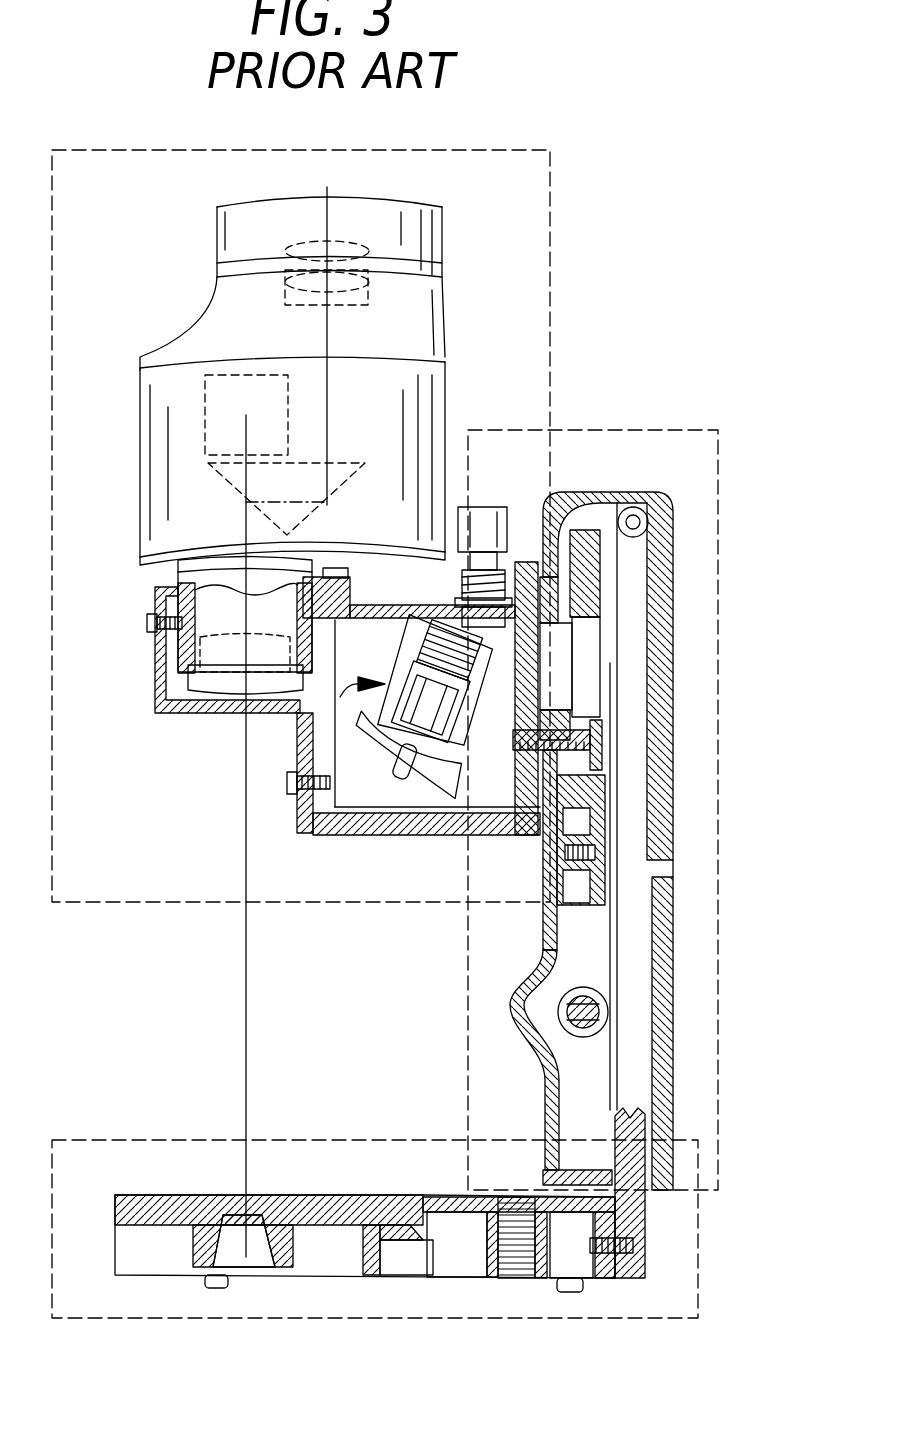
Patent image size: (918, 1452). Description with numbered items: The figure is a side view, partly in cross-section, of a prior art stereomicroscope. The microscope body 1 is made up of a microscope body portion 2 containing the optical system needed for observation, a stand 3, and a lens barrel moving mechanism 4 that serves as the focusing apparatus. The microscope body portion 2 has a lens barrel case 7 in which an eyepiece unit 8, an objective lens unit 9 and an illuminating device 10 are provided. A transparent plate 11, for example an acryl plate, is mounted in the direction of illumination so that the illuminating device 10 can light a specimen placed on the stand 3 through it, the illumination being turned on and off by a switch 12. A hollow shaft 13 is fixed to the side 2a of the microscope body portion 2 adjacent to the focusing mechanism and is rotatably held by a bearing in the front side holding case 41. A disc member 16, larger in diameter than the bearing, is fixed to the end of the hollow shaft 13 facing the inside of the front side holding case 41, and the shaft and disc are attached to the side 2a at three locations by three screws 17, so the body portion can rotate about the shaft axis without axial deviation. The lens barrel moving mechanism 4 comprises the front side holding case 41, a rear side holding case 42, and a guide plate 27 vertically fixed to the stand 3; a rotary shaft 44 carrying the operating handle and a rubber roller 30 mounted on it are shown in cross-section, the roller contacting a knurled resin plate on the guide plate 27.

The microscope body 1 is at (625, 297).
The microscope body portion 2 is at (510, 148).
The side of the microscope body portion 2a is at (527, 562).
The stand 3 is at (700, 1268).
The lens barrel moving mechanism 4 is at (720, 762).
The lens barrel case 7 is at (446, 393).
The eyepiece unit 8 is at (372, 250).
The objective lens unit 9 is at (205, 655).
The illuminating device 10 is at (333, 700).
The transparent plate 11 is at (368, 820).
The switch 12 is at (483, 513).
The hollow shaft 13 is at (567, 703).
The disc member 16 is at (593, 565).
The screws 17 is at (603, 742).
The guide plate 27 is at (640, 1128).
The rubber roller 30 is at (568, 1035).
The front side holding case 41 is at (550, 933).
The rear side holding case 42 is at (660, 998).
The rotary shaft 44 is at (563, 1003).